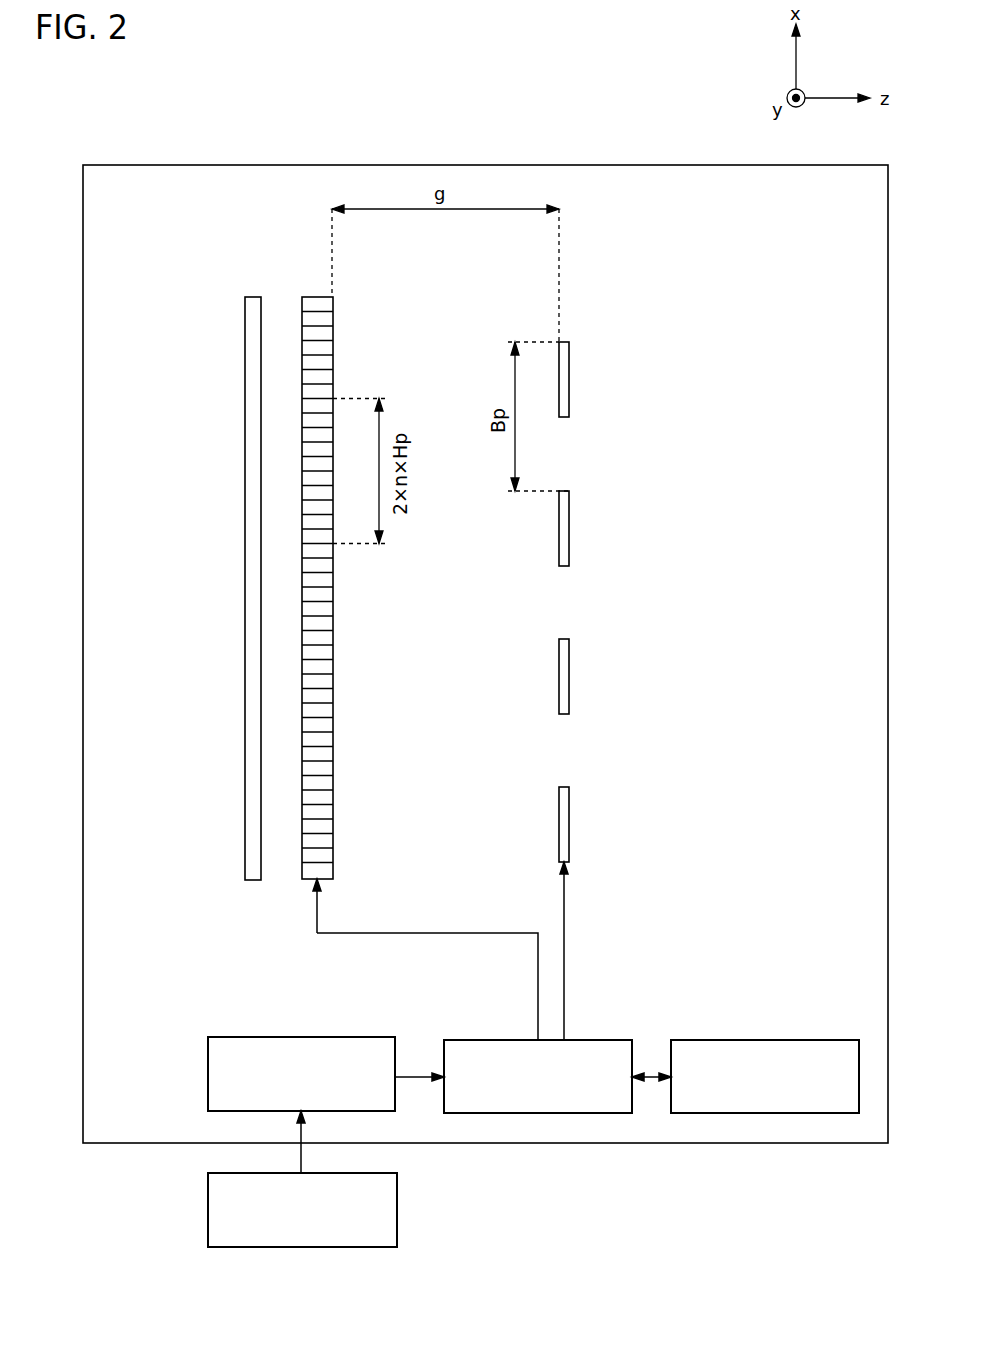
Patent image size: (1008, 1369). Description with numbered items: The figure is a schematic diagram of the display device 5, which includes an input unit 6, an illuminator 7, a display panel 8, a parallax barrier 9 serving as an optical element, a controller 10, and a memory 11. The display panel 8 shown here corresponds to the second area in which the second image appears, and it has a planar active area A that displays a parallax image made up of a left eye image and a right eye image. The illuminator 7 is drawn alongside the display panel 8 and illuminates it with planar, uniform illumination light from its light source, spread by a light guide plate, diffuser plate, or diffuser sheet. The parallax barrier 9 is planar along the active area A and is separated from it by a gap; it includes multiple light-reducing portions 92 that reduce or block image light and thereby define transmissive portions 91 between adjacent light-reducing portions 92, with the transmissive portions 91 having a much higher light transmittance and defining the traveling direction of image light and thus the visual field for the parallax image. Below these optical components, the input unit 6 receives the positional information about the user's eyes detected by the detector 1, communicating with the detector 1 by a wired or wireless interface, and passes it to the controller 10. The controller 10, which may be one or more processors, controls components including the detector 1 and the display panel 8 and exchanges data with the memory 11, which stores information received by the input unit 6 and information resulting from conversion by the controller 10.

The detector 1 is at (208, 1208).
The display device 5 is at (143, 165).
The input unit 6 is at (208, 1068).
The illuminator 7 is at (253, 297).
The display panel 8 is at (318, 297).
The parallax barrier 9 is at (620, 602).
The controller 10 is at (492, 1040).
The memory 11 is at (784, 1040).
The transmissive portion 91 is at (604, 464).
The light-reducing portion 92 is at (570, 372).
The active area A is at (333, 314).